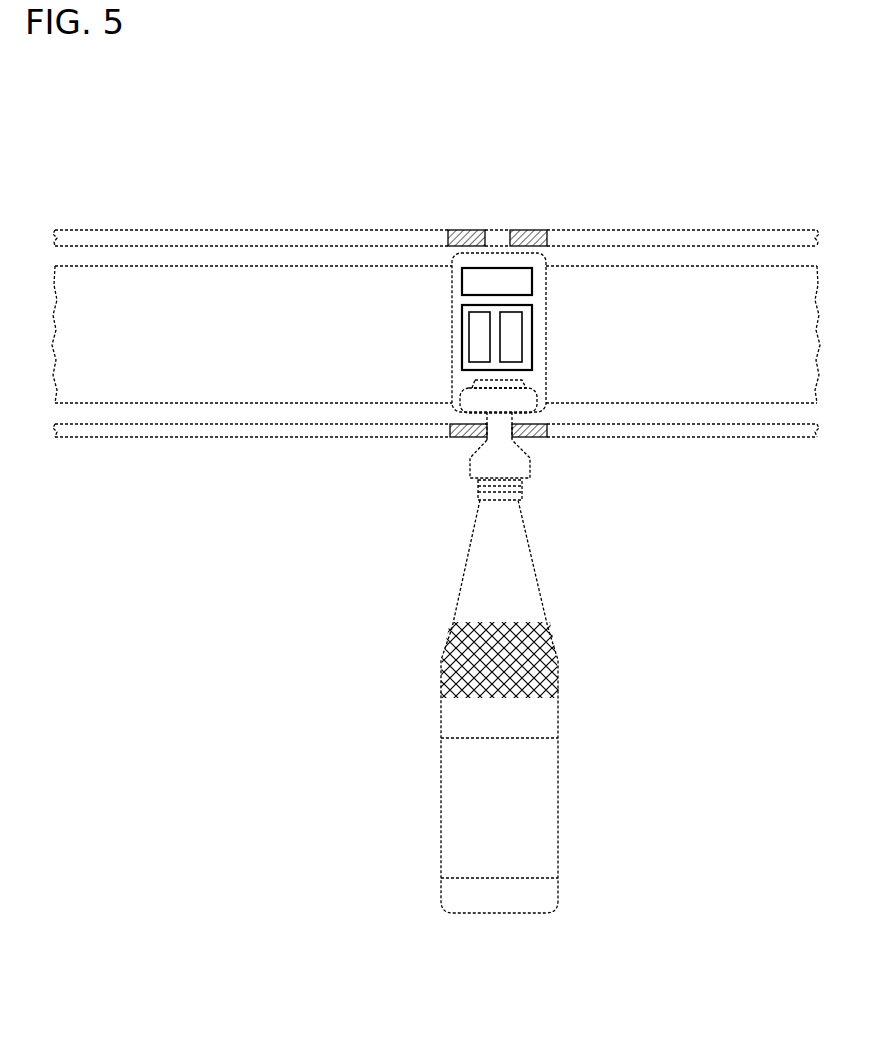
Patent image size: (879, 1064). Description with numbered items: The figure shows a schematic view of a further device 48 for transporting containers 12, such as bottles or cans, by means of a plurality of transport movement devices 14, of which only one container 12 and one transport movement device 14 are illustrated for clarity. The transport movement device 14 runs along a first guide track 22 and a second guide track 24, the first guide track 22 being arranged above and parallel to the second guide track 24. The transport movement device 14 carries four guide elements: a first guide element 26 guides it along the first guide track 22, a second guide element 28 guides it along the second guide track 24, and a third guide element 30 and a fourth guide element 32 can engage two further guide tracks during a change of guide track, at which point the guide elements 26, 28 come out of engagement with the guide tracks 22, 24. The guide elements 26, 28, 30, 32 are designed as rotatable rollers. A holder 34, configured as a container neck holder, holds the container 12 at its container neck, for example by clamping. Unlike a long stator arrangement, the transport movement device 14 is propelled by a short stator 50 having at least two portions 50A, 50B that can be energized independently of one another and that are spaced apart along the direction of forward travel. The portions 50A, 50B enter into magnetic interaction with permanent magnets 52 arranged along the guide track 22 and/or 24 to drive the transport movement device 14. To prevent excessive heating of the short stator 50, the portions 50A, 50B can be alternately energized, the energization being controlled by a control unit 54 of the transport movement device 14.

The container 12 is at (560, 765).
The transport movement device 14 is at (455, 294).
The first guide track 22 is at (150, 238).
The second guide track 24 is at (250, 432).
The first guide element 26 is at (453, 226).
The second guide element 28 is at (470, 434).
The third guide element 30 is at (537, 226).
The fourth guide element 32 is at (540, 440).
The holder 34 is at (518, 470).
The device for transporting containers 48 is at (440, 88).
The short stator 50 is at (489, 383).
The first portion of the short stator 50A is at (485, 350).
The second portion of the short stator 50B is at (532, 327).
The permanent magnets 52 is at (135, 382).
The control unit 54 is at (533, 283).